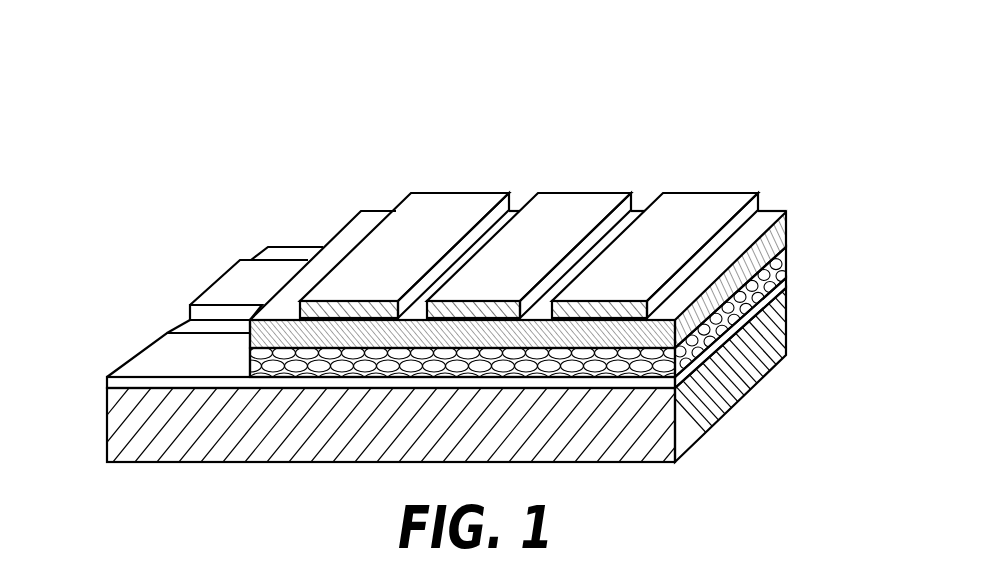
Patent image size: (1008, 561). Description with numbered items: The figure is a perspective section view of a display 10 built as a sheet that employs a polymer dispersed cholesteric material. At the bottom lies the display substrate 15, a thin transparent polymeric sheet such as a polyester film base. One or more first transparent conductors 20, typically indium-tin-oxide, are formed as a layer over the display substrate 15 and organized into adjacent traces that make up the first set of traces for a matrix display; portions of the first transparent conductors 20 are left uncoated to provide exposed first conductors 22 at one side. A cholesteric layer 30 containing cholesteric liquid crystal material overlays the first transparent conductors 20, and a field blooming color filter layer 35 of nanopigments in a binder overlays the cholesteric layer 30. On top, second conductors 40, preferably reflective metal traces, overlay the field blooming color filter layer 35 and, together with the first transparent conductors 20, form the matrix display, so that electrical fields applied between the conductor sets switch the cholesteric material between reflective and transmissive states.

The display 10 is at (272, 74).
The display substrate 15 is at (132, 426).
The first transparent conductors 20 is at (710, 352).
The exposed first conductors 22 is at (237, 290).
The cholesteric layer 30 is at (788, 268).
The field blooming color filter layer 35 is at (788, 223).
The second conductors 40 is at (487, 300).